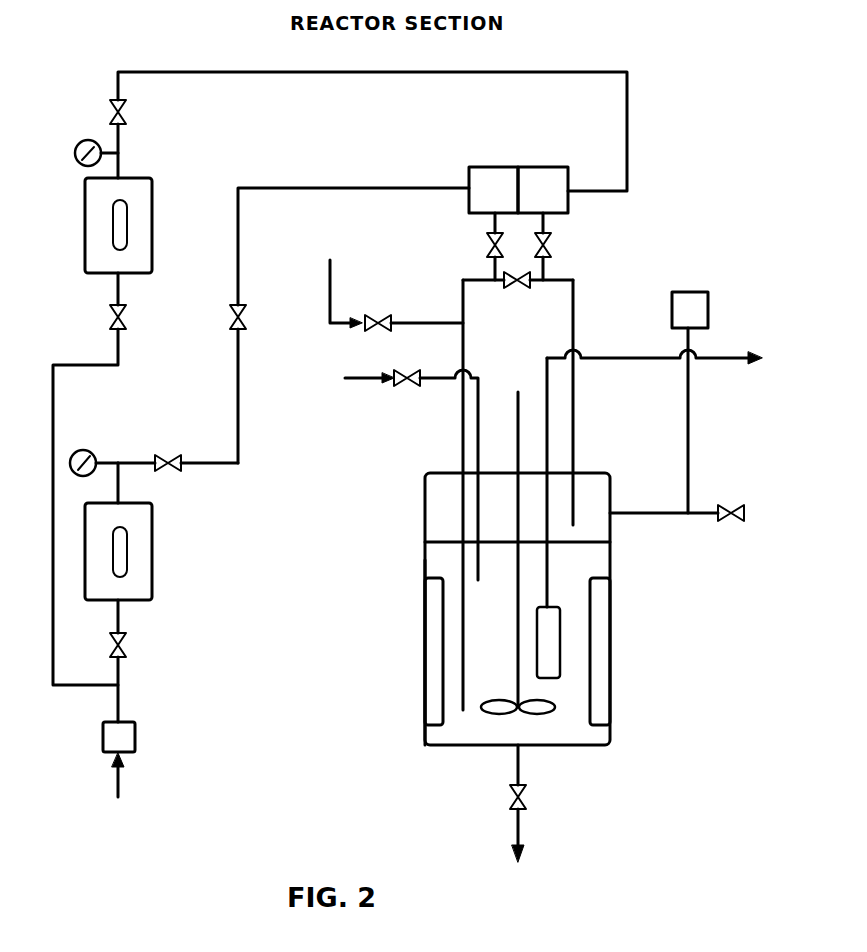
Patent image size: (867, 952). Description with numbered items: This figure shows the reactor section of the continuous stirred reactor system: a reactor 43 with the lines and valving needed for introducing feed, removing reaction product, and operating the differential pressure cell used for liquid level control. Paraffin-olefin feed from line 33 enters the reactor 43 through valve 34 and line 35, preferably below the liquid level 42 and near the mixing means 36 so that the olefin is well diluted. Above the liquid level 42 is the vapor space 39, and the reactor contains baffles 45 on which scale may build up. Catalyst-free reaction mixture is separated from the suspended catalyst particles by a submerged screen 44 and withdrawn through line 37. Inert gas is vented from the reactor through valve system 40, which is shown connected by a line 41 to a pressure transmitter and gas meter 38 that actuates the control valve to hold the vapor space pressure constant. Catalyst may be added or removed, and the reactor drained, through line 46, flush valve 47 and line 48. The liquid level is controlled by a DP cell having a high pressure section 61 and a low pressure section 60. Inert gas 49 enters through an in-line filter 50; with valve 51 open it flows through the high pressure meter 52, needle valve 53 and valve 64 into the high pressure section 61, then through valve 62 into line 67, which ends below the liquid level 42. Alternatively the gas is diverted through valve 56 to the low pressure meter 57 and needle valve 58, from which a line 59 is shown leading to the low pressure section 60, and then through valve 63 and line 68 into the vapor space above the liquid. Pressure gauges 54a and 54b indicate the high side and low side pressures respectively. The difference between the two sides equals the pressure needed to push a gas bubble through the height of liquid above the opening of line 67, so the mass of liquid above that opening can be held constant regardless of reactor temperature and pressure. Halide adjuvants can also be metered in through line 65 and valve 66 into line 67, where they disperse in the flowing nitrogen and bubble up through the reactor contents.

The feed line 33 is at (343, 405).
The valve 34 is at (405, 372).
The line 35 is at (479, 418).
The mixing means 36 is at (518, 440).
The line 37 is at (598, 360).
The pressure transmitter and gas meter 38 is at (686, 292).
The vapor space 39 is at (447, 488).
The valve system 40 is at (734, 506).
The control line 41 is at (690, 457).
The liquid level 42 is at (440, 540).
The reactor 43 is at (425, 563).
The submerged screen 44 is at (560, 636).
The reactor baffles 45 is at (435, 688).
The line 46 is at (518, 775).
The flush valve 47 is at (509, 797).
The line 48 is at (520, 833).
The inert gas 49 is at (122, 783).
The in-line filter 50 is at (136, 736).
The valve 51 is at (126, 646).
The high pressure meter 52 is at (152, 592).
The needle valve 53 is at (163, 457).
The pressure gauge 54a is at (87, 450).
The pressure gauge 54b is at (78, 144).
The valve 56 is at (110, 321).
The low pressure meter 57 is at (85, 217).
The needle valve 58 is at (128, 112).
The vent line 59 is at (506, 72).
The low pressure section 60 is at (541, 167).
The high pressure section 61 is at (490, 167).
The valve 62 is at (487, 246).
The valve 63 is at (331, 292).
The valve 64 is at (245, 323).
The line 65 is at (551, 252).
The valve 66 is at (380, 316).
The line 67 is at (464, 311).
The line 68 is at (574, 311).